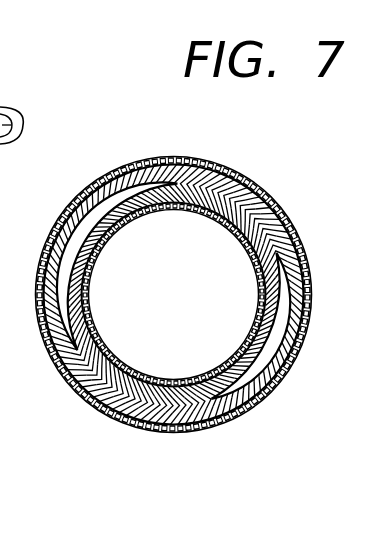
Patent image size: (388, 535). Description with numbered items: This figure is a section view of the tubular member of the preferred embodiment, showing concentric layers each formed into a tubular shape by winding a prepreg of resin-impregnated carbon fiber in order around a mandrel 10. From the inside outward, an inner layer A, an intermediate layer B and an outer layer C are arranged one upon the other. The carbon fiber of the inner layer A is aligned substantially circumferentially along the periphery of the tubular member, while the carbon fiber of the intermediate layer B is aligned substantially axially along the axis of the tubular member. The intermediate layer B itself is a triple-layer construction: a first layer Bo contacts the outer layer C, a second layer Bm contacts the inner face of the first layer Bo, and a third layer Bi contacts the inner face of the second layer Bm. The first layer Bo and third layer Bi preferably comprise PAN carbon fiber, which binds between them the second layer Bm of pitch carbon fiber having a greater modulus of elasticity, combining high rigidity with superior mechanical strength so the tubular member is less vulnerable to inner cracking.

The mandrel 10 is at (22, 128).
The inner layer A is at (224, 221).
The intermediate layer B is at (192, 326).
The first layer Bo is at (287, 235).
The second layer Bm is at (278, 260).
The third layer Bi is at (273, 285).
The outer layer C is at (272, 202).